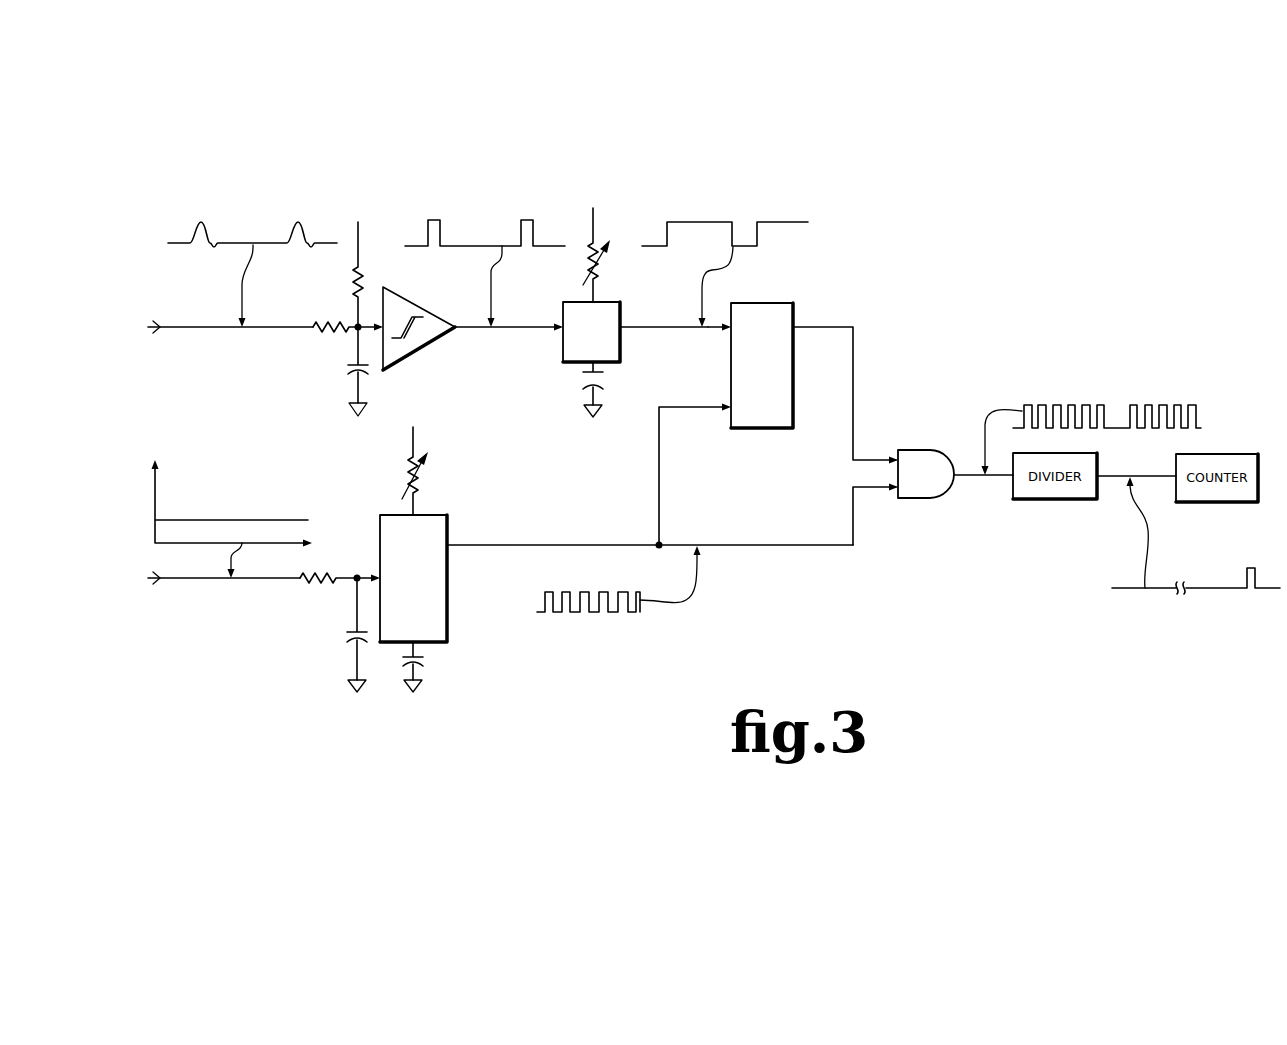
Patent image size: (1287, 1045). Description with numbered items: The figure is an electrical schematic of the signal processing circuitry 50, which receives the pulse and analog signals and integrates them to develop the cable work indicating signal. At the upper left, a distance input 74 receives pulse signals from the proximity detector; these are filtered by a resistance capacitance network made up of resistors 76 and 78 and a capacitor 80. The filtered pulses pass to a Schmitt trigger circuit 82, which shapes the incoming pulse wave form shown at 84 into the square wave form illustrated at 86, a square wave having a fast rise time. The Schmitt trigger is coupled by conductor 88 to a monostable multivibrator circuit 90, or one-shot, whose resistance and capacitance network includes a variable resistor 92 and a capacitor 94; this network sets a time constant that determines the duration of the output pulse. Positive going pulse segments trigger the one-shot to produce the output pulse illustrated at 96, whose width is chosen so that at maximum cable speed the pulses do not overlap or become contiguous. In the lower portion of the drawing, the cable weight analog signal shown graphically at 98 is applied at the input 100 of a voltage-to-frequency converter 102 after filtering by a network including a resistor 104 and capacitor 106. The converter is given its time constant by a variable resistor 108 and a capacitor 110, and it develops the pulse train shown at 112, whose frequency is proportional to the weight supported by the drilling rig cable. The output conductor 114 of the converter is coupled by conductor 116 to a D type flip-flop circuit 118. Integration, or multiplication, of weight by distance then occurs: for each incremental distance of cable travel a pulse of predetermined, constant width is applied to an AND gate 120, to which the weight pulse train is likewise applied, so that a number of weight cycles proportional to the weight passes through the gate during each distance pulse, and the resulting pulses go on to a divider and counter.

The signal processing circuitry 50 is at (980, 208).
The distance input 74 is at (152, 329).
The resistor 76 is at (330, 334).
The resistor 78 is at (354, 285).
The capacitor 80 is at (340, 371).
The Schmitt trigger circuit 82 is at (423, 349).
The pulse wave form 84 is at (189, 243).
The square wave form 86 is at (470, 245).
The conductor 88 is at (523, 331).
The monostable multivibrator circuit 90 is at (610, 352).
The variable resistor 92 is at (608, 262).
The capacitor 94 is at (583, 386).
The output pulse 96 is at (793, 222).
The cable weight analog signal 98 is at (255, 520).
The input 100 is at (150, 580).
The voltage-to-frequency converter 102 is at (448, 597).
The resistor 104 is at (316, 588).
The capacitor 106 is at (350, 647).
The variable resistor 108 is at (407, 483).
The capacitor 110 is at (423, 663).
The pulse train 112 is at (617, 614).
The output conductor 114 is at (773, 544).
The conductor 116 is at (659, 480).
The D type flip-flop circuit 118 is at (782, 430).
The AND gate 120 is at (920, 499).